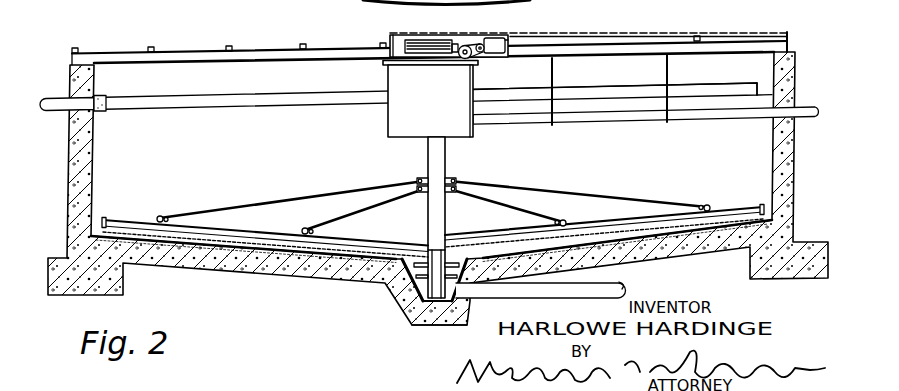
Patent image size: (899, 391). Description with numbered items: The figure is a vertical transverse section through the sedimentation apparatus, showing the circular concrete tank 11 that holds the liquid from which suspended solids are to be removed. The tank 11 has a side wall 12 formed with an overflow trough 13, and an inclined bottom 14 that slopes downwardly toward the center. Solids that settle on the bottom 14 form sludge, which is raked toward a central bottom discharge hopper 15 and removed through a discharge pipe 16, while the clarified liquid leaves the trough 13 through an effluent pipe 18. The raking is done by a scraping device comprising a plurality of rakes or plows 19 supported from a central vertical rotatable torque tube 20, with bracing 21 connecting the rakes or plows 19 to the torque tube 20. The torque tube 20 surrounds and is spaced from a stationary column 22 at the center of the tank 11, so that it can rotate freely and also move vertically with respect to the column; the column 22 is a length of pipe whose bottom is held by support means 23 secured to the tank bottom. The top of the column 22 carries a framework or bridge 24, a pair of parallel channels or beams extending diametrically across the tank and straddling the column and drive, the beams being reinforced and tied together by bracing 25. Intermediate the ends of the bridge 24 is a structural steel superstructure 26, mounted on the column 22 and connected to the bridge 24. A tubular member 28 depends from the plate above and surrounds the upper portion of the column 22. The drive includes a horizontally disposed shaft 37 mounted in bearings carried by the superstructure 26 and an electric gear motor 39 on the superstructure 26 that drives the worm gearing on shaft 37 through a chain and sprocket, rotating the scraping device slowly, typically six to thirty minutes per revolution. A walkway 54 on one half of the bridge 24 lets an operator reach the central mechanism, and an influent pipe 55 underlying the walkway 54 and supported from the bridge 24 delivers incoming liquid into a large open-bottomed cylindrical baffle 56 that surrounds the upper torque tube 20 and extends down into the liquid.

The tank 11 is at (790, 74).
The side wall 12 is at (70, 205).
The overflow trough 13 is at (101, 100).
The inclined bottom 14 is at (283, 254).
The bottom discharge hopper 15 is at (410, 297).
The discharge pipe 16 is at (624, 283).
The effluent pipe 18 is at (53, 97).
The rakes or plows 19 is at (257, 239).
The torque tube 20 is at (441, 157).
The bracing 21 is at (345, 207).
The stationary column 22 is at (444, 270).
The column support means 23 is at (415, 317).
The framework or bridge 24 is at (125, 57).
The bracing 25 is at (152, 49).
The superstructure 26 is at (392, 38).
The tubular member 28 is at (432, 41).
The shaft 37 is at (477, 58).
The electric motor 39 is at (501, 38).
The walkway 54 is at (644, 35).
The influent pipe 55 is at (623, 118).
The cylindrical baffle 56 is at (430, 99).